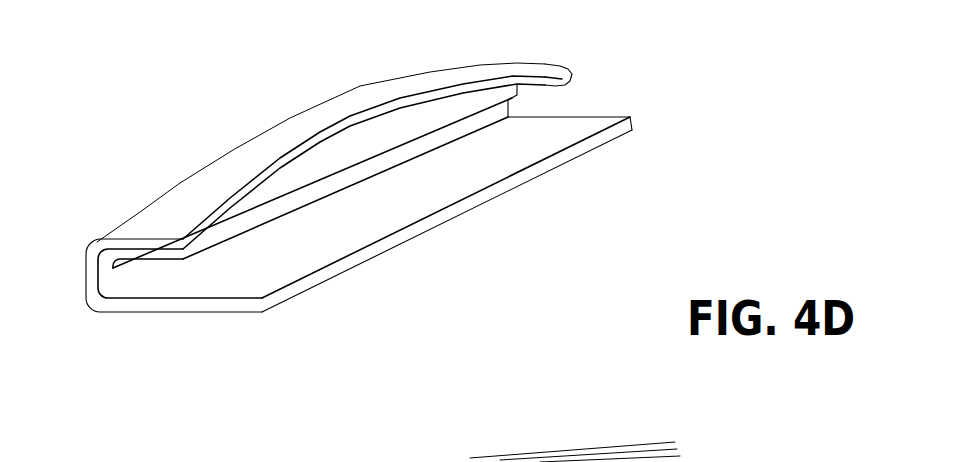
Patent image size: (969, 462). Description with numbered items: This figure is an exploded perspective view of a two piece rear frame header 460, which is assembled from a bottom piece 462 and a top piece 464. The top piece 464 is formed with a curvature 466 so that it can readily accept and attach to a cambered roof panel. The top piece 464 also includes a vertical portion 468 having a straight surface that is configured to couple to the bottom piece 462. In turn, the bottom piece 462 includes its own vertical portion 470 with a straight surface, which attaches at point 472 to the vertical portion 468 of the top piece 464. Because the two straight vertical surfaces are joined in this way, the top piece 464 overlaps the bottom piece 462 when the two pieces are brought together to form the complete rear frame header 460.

The two piece rear frame header 460 is at (97, 57).
The bottom piece 462 is at (261, 304).
The top piece 464 is at (532, 66).
The curvature 466 is at (275, 139).
The vertical portion 468 is at (334, 180).
The vertical portion 470 is at (88, 242).
The point 472 is at (98, 268).